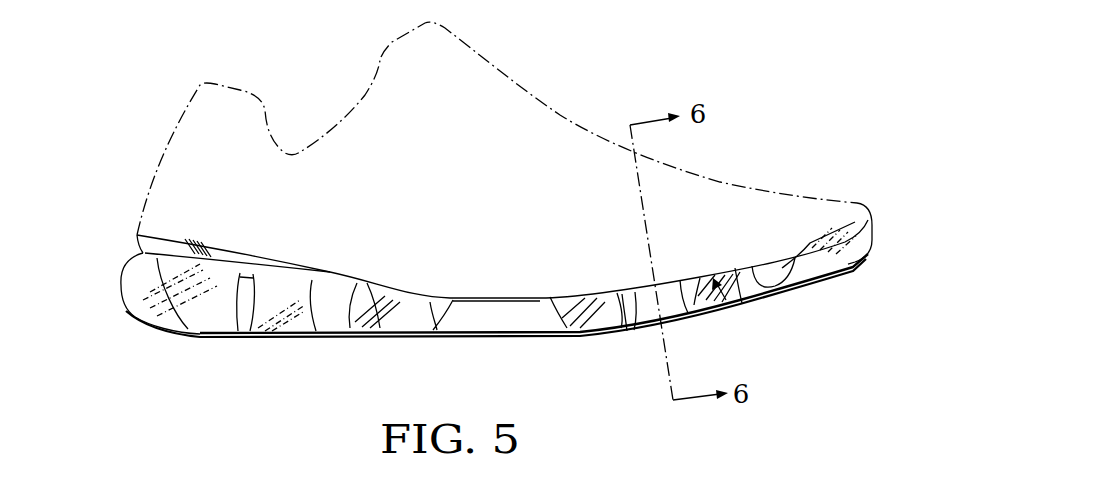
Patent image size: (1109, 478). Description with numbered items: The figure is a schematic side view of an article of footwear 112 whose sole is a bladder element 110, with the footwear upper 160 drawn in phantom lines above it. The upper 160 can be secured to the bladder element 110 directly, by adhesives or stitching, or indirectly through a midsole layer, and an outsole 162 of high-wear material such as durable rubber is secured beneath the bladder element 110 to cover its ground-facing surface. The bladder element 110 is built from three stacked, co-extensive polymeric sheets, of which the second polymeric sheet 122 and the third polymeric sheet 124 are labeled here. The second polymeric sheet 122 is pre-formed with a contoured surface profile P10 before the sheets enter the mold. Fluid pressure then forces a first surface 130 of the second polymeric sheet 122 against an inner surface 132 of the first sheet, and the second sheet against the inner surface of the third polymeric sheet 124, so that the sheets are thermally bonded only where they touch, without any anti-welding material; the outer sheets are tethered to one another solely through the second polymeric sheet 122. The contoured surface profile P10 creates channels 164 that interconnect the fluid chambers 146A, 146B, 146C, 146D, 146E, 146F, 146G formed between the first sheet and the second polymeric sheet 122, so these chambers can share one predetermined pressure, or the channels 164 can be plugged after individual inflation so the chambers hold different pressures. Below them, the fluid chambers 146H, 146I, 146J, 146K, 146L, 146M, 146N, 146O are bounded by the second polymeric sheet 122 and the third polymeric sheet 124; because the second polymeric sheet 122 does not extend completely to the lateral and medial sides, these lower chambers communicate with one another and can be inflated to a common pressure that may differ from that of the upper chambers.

The bladder element 110 is at (120, 277).
The article of footwear 112 is at (746, 60).
The second polymeric sheet 122 is at (120, 288).
The third polymeric sheet 124 is at (122, 242).
The first surface of the second polymeric sheet 130 is at (691, 266).
The inner surface of the first polymeric sheet 132 is at (752, 303).
The fluid chamber 146A is at (205, 297).
The fluid chamber 146B is at (315, 300).
The fluid chamber 146C is at (433, 307).
The fluid chamber 146D is at (578, 305).
The fluid chamber 146E is at (650, 317).
The fluid chamber 146F is at (740, 287).
The fluid chamber 146G is at (872, 253).
The fluid chamber 146H is at (150, 307).
The fluid chamber 146I is at (240, 298).
The fluid chamber 146J is at (357, 325).
The fluid chamber 146K is at (507, 315).
The fluid chamber 146L is at (618, 313).
The fluid chamber 146M is at (694, 303).
The fluid chamber 146N is at (793, 300).
The fluid chamber 146O is at (875, 232).
The upper 160 is at (527, 89).
The outsole 162 is at (163, 336).
The channels 164 is at (250, 252).
The contoured surface profile P10 is at (246, 328).